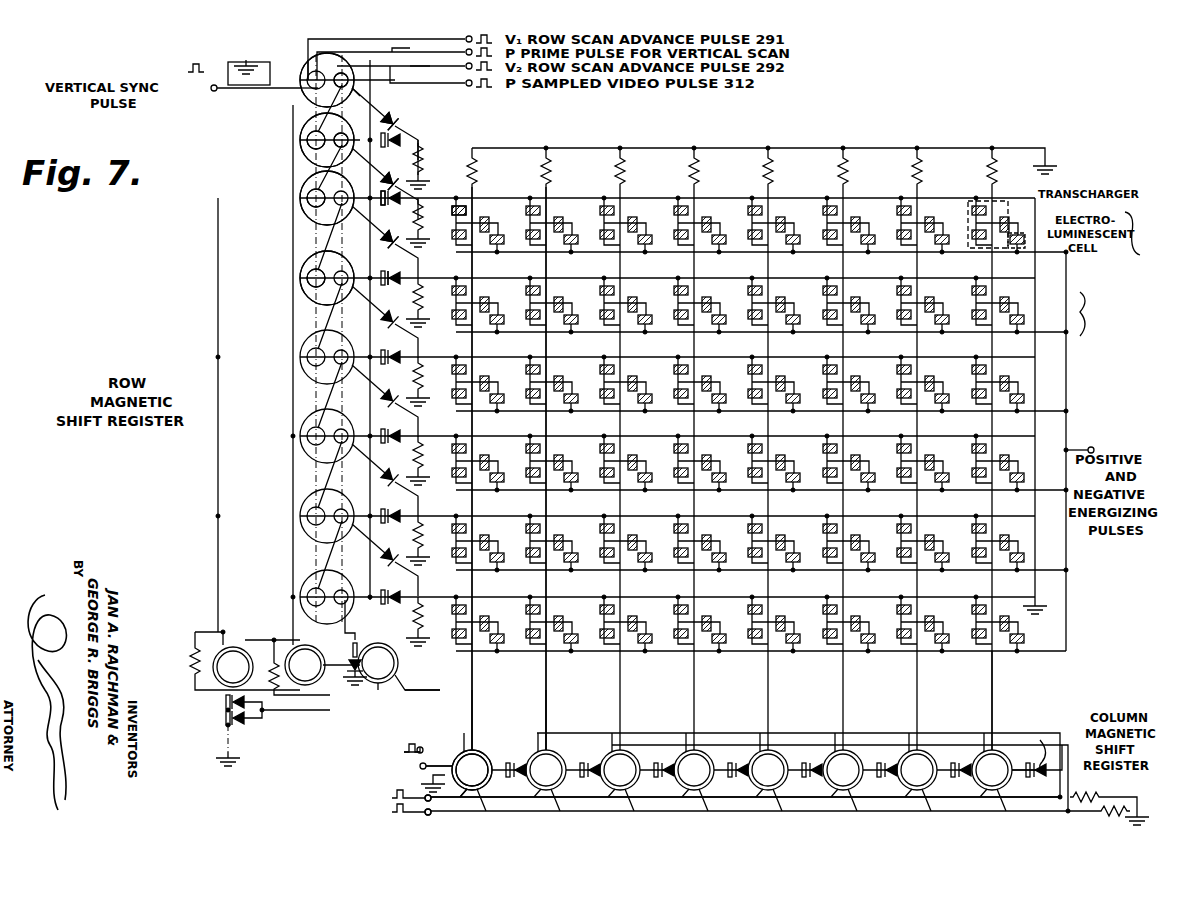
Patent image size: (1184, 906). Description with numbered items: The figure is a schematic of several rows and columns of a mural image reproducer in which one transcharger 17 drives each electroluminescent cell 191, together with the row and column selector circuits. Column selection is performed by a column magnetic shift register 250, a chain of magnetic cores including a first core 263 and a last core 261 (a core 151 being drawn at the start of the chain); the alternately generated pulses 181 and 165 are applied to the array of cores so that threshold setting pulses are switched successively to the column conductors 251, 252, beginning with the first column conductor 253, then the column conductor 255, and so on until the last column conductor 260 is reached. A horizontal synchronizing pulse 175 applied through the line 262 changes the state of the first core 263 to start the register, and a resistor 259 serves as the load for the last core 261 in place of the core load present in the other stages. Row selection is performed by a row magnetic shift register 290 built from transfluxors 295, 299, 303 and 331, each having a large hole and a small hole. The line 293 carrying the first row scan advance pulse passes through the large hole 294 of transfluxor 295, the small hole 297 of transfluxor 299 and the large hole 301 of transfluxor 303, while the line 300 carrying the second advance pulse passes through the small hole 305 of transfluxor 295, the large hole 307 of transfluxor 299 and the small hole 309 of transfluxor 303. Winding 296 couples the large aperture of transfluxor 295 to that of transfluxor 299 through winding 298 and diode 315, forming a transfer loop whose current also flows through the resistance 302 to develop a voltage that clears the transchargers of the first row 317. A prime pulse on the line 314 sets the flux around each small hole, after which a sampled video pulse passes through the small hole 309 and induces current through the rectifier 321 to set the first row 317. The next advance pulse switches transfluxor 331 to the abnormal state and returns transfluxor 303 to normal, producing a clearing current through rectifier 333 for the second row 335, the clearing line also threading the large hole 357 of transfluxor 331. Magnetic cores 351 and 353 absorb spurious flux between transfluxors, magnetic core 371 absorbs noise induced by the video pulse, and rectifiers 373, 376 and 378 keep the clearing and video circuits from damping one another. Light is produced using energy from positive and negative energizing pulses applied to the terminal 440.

The transcharger 17 is at (1008, 206).
The first column core 151 is at (480, 755).
The pulse 165 is at (392, 813).
The horizontal synchronizing pulse 175 is at (422, 744).
The pulse 181 is at (393, 798).
The electroluminescent cell 191 is at (1026, 240).
The column magnetic shift register 250 is at (385, 777).
The column conductor 251 is at (478, 136).
The column conductor 252 is at (566, 136).
The first column conductor 253 is at (478, 702).
The column conductor 255 is at (551, 702).
The resistor 259 is at (1035, 738).
The last column conductor 260 is at (998, 695).
The last core 261 is at (1027, 784).
The line 262 is at (440, 764).
The first core 263 is at (490, 786).
The row magnetic shift register 290 is at (308, 150).
The line 293 is at (320, 47).
The large hole 294 is at (314, 66).
The transfluxor 295 is at (306, 92).
The winding 296 is at (356, 94).
The small hole 297 is at (350, 135).
The winding 298 is at (302, 130).
The transfluxor 299 is at (310, 160).
The line 300 is at (418, 70).
The large hole 301 is at (303, 210).
The resistance 302 is at (445, 209).
The transfluxor 303 is at (305, 226).
The small hole 305 is at (352, 78).
The large hole 307 is at (308, 146).
The small hole 309 is at (388, 184).
The line 314 is at (402, 698).
The diode 315 is at (392, 110).
The first row 317 is at (1148, 242).
The rectifier 321 is at (397, 191).
The transfluxor 331 is at (303, 296).
The rectifier 333 is at (389, 270).
The second row of transchargers 335 is at (384, 228).
The magnetic core 351 is at (232, 645).
The magnetic core 353 is at (308, 688).
The large hole 357 is at (307, 270).
The magnetic core 371 is at (400, 665).
The rectifier 373 is at (359, 657).
The rectifier 376 is at (224, 702).
The rectifier 378 is at (236, 724).
The terminal 440 is at (1092, 448).